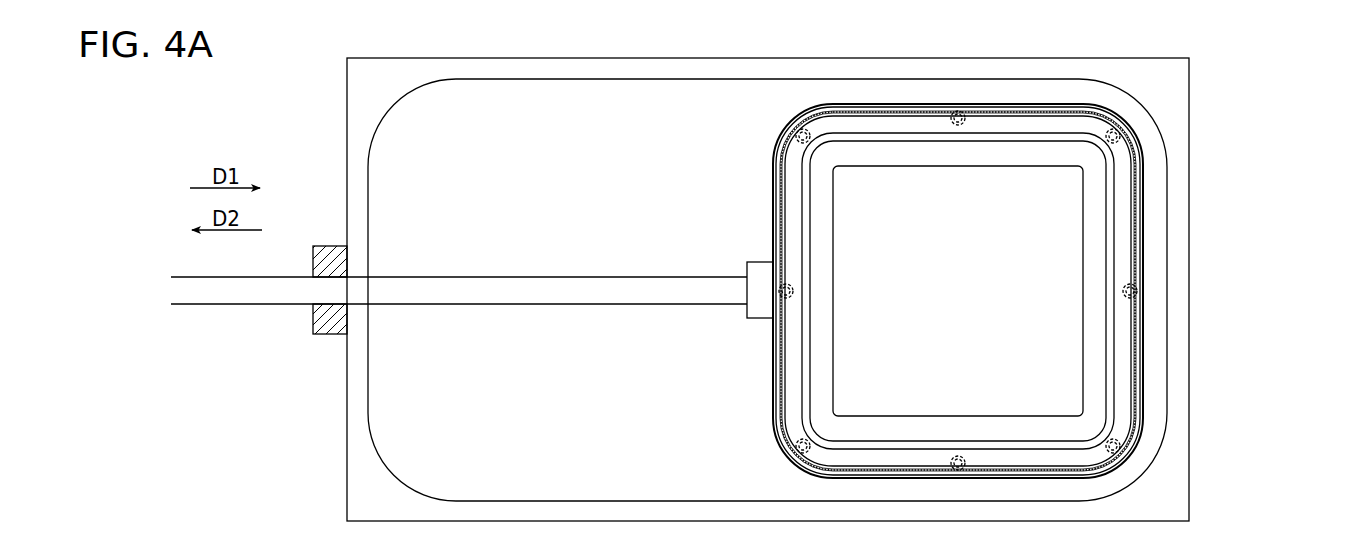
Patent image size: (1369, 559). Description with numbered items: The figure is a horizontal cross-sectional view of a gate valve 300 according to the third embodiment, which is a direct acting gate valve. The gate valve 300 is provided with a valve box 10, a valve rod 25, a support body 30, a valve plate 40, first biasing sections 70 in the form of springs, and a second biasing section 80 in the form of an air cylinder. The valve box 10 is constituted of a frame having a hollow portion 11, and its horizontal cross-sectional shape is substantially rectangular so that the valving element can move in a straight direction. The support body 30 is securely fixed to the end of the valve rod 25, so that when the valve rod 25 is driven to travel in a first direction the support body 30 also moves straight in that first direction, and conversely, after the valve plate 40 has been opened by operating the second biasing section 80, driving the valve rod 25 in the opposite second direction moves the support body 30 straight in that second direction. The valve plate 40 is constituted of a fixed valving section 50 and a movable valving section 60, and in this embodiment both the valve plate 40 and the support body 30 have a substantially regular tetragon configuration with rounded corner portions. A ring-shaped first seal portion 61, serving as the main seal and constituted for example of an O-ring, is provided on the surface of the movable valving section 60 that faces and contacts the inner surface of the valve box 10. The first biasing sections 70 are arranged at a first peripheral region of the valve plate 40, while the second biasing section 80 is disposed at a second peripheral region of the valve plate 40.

The gate valve 300 is at (741, 287).
The valve box 10 is at (693, 67).
The hollow portion 11 is at (579, 103).
The valve rod 25 is at (558, 288).
The support body 30 is at (759, 307).
The valve plate 40 is at (1036, 331).
The fixed valving section 50 is at (1070, 319).
The movable valving section 60 is at (1014, 331).
The first seal portion 61 is at (1020, 470).
The first biasing sections 70 is at (833, 465).
The second biasing section 80 is at (913, 425).